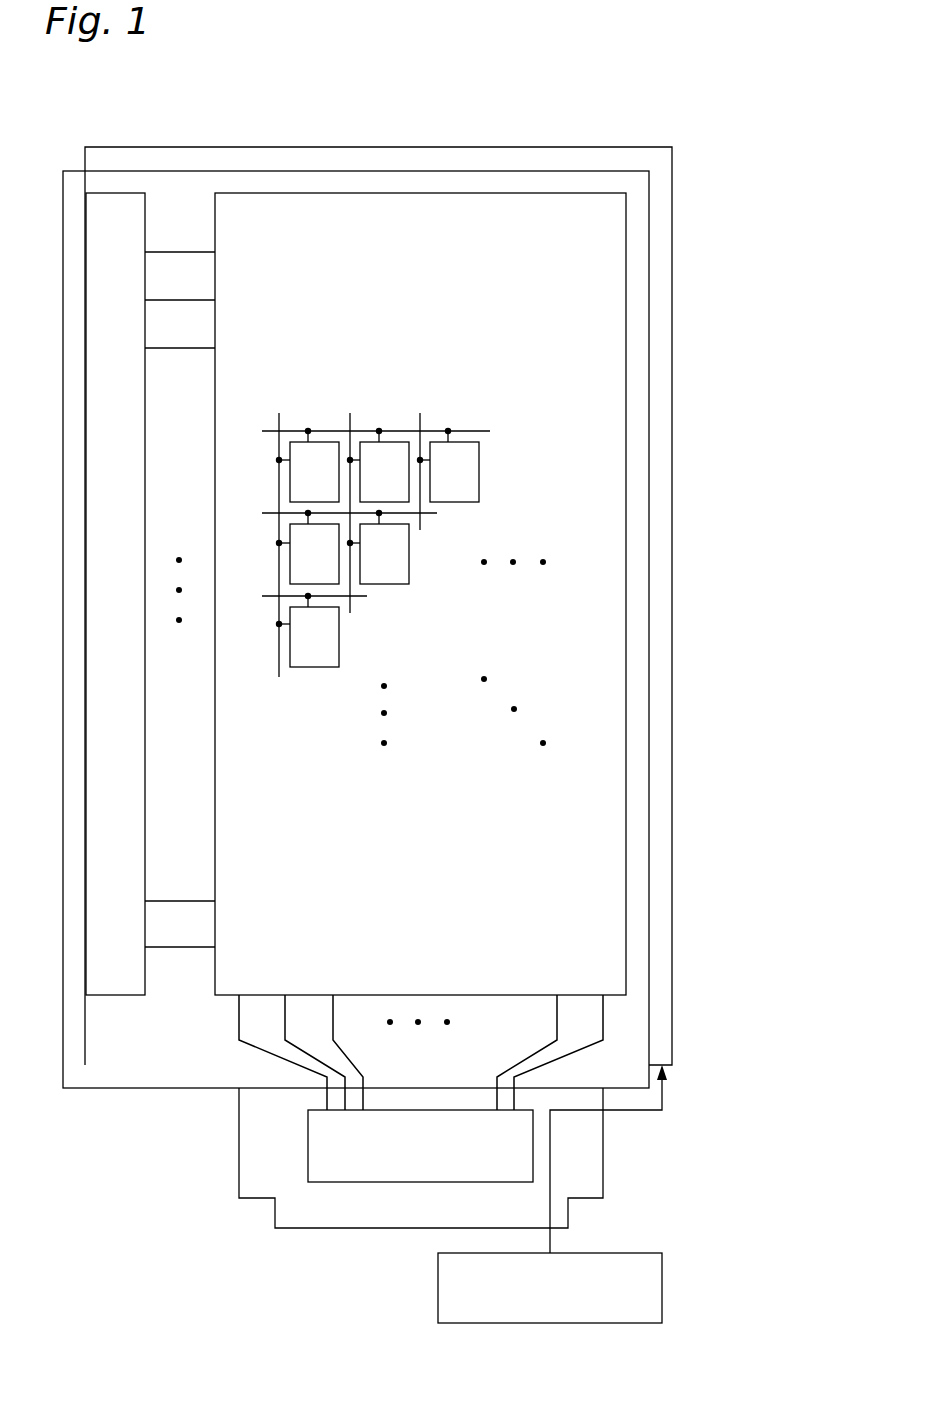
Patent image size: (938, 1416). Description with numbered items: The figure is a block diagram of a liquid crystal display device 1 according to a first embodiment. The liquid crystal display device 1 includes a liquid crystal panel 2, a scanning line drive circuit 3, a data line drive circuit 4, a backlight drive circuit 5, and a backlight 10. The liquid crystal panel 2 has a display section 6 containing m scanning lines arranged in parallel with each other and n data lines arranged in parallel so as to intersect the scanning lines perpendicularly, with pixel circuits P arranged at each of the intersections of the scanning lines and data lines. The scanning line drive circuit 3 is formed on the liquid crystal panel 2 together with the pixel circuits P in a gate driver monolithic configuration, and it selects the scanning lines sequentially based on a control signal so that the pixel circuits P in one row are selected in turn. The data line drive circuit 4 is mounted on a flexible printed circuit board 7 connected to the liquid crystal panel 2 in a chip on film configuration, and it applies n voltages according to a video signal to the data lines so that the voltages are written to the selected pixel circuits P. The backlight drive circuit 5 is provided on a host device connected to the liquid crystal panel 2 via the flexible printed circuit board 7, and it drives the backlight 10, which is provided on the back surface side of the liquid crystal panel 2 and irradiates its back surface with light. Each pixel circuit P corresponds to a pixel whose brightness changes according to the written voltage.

The liquid crystal display device 1 is at (356, 128).
The liquid crystal panel 2 is at (648, 445).
The scanning line drive circuit 3 is at (112, 995).
The data line drive circuit 4 is at (308, 1152).
The backlight drive circuit 5 is at (438, 1290).
The display section 6 is at (626, 592).
The flexible printed circuit board 7 is at (603, 1150).
The backlight 10 is at (672, 750).
The pixel circuit P is at (385, 585).